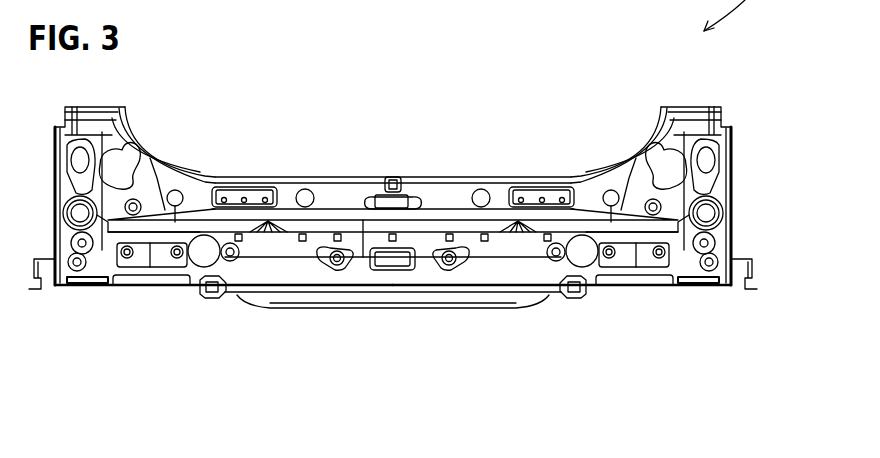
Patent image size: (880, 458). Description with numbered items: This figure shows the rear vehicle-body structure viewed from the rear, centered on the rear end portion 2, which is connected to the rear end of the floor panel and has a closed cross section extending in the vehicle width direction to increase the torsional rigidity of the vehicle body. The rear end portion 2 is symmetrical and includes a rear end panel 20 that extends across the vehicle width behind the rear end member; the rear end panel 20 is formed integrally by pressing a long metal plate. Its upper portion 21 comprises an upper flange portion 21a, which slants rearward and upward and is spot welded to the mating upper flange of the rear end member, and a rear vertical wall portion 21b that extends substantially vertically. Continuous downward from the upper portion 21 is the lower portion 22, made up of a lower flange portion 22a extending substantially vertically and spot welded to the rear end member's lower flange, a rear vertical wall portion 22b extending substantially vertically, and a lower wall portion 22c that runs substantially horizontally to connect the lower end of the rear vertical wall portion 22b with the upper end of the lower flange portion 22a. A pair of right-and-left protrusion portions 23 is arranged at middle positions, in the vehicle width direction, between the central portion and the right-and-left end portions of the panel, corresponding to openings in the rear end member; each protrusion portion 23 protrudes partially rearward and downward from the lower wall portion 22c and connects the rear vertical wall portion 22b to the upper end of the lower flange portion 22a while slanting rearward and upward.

The rear end portion 2 is at (633, 318).
The rear end panel 20 is at (358, 269).
The upper portion 21 is at (438, 199).
The upper flange portion 21a is at (348, 183).
The rear vertical wall portion 21b is at (320, 192).
The lower portion 22 is at (522, 236).
The lower flange portion 22a is at (297, 253).
The rear vertical wall portion 22b is at (431, 218).
The lower wall portion 22c is at (472, 229).
The protrusion portion 23 is at (258, 236).